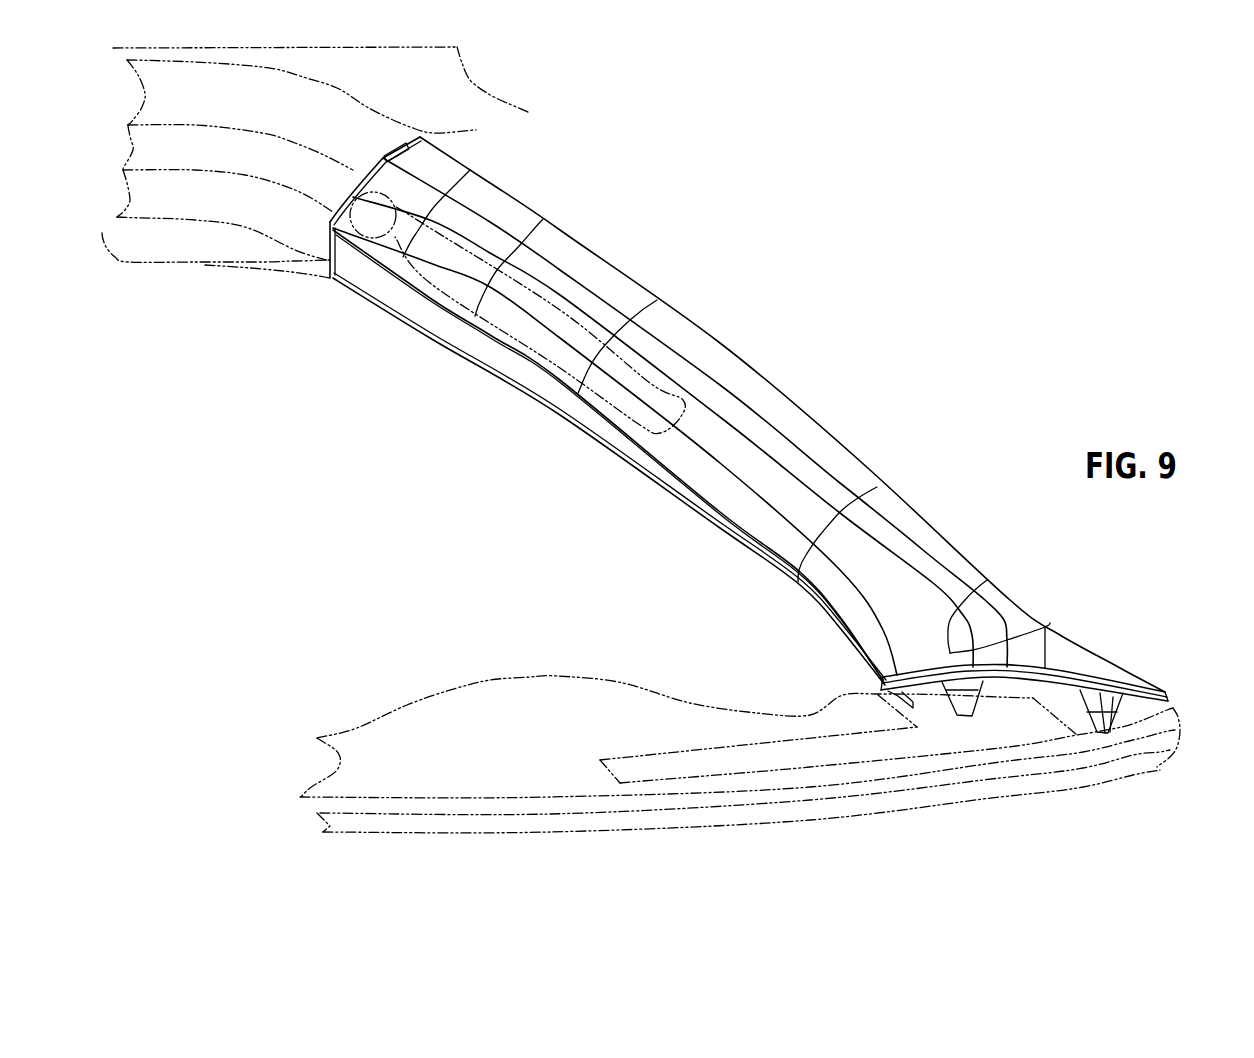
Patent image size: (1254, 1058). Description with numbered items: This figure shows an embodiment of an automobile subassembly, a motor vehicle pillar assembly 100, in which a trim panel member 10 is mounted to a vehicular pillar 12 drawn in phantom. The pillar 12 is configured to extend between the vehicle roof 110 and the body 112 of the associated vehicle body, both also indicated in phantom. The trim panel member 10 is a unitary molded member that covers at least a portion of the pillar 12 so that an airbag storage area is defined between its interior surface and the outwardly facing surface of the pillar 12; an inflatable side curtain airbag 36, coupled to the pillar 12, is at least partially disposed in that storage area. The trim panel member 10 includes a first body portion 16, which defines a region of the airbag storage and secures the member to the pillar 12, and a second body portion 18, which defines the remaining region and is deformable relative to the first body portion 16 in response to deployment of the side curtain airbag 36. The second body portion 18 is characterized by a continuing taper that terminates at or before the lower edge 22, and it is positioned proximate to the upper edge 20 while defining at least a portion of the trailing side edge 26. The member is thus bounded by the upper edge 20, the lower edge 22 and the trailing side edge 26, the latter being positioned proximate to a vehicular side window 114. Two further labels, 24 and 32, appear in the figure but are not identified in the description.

The pillar trim panel member 10 is at (597, 253).
The pillar 12 is at (312, 99).
The first body portion 16 is at (717, 359).
The second body portion 18 is at (603, 420).
The upper edge 20 is at (350, 197).
The lower edge 22 is at (1168, 698).
The outer wall 24 is at (857, 457).
The trailing side edge 26 is at (462, 353).
The lip 32 is at (717, 513).
The inflatable side curtain airbag 36 is at (657, 317).
The pillar assembly 100 is at (470, 455).
The vehicle roof 110 is at (316, 162).
The vehicle body 112 is at (1133, 752).
The side window 114 is at (433, 552).